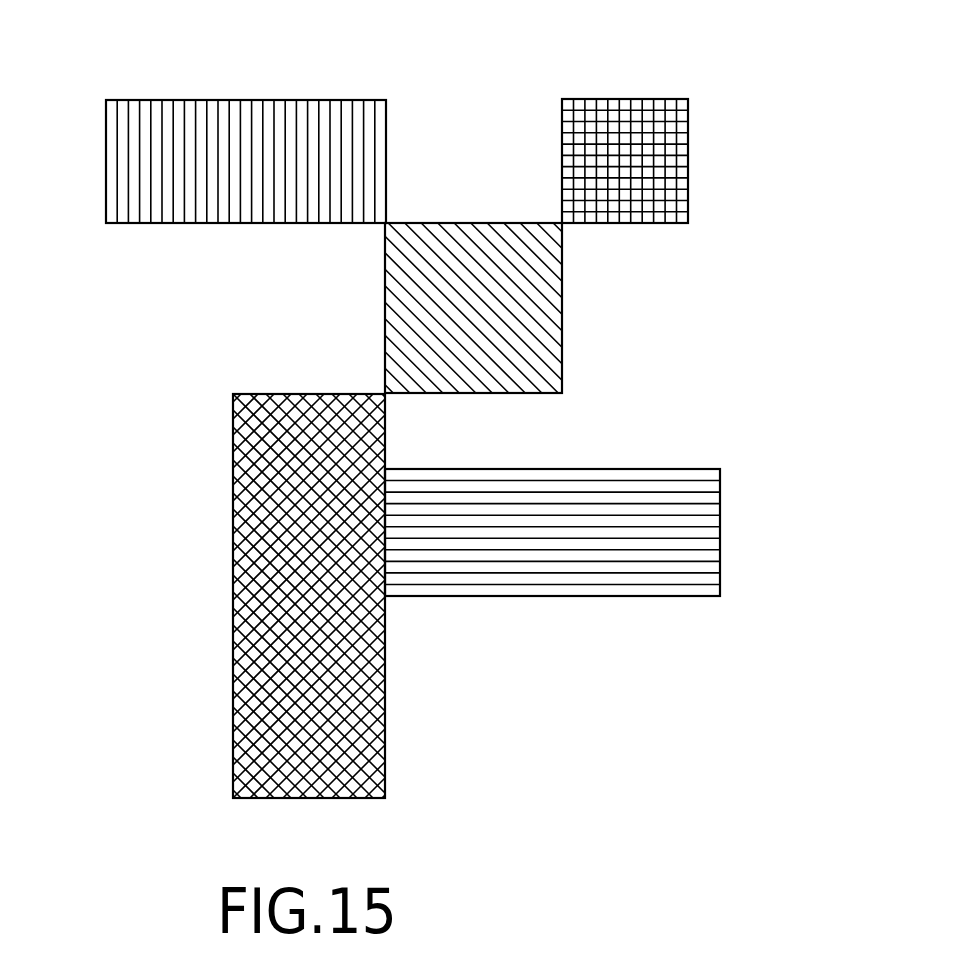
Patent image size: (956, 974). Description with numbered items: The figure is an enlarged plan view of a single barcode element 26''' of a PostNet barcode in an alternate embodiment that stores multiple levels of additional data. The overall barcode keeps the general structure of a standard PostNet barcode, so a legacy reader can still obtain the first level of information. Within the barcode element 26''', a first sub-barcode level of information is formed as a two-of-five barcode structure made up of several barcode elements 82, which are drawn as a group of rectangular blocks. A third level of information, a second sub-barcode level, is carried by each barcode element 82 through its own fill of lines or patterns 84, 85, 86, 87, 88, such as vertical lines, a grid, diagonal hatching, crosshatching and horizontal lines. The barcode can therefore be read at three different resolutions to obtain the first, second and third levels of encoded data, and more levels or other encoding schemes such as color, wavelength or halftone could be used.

The barcode element 26''' is at (458, 408).
The barcode elements 82 is at (106, 163).
The lines or patterns 84 is at (227, 102).
The lines or patterns 85 is at (625, 105).
The lines or patterns 86 is at (480, 228).
The lines or patterns 87 is at (233, 465).
The lines or patterns 88 is at (513, 590).